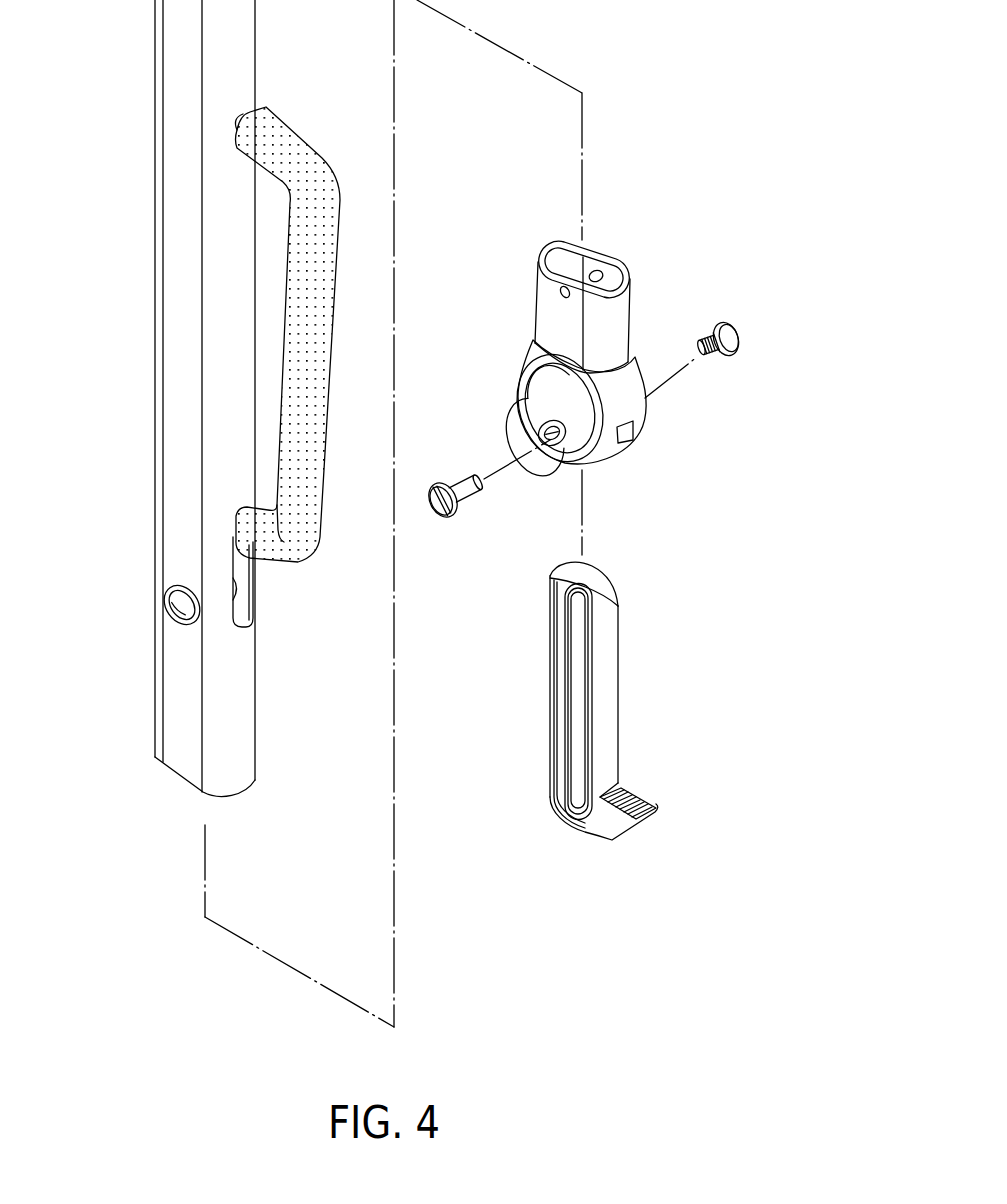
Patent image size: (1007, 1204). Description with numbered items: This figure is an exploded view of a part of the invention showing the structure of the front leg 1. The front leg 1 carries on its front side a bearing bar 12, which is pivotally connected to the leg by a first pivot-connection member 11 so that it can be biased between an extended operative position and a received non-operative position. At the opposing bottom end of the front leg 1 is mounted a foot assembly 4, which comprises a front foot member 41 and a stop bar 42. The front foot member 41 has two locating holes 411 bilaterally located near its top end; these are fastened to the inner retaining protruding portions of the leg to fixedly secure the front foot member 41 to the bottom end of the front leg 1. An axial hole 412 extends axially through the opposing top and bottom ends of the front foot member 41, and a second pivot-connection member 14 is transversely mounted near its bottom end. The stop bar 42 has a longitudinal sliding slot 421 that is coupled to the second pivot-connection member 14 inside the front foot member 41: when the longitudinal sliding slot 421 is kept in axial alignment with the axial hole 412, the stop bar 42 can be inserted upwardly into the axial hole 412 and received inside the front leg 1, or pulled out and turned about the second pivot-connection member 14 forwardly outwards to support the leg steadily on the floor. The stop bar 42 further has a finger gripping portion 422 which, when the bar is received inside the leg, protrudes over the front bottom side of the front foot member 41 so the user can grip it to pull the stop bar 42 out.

The front leg 1 is at (146, 318).
The first pivot-connection member 11 is at (170, 615).
The bearing bar 12 is at (322, 157).
The second pivot-connection member 14 is at (468, 498).
The foot assembly 4 is at (658, 479).
The front foot member 41 is at (595, 319).
The locating holes 411 is at (598, 262).
The axial hole 412 is at (562, 250).
The stop bar 42 is at (594, 701).
The longitudinal sliding slot 421 is at (572, 718).
The finger gripping portion 422 is at (637, 798).